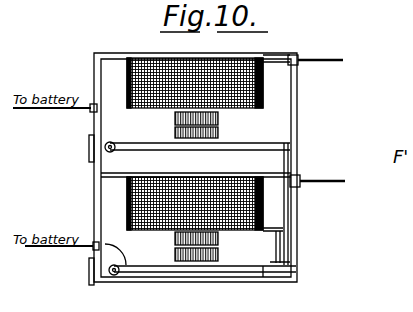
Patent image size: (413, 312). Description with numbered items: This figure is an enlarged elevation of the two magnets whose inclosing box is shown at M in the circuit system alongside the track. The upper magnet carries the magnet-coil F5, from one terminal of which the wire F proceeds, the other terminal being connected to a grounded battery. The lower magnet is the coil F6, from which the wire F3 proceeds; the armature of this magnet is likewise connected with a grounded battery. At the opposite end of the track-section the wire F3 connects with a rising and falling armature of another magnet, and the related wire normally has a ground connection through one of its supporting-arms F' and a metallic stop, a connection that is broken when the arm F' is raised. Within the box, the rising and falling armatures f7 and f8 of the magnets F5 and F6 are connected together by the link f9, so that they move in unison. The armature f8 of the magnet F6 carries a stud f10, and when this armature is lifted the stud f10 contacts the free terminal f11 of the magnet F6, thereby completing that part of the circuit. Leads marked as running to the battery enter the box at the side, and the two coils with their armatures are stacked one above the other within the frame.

The inclosing box M is at (193, 152).
The supporting-arm F' is at (312, 57).
The wire F3 is at (328, 174).
The magnet-coil F5 is at (263, 83).
The magnet coil F6 is at (177, 173).
The armature f7 is at (216, 124).
The armature f8 is at (195, 219).
The link f9 is at (288, 197).
The stud f10 is at (280, 242).
The free terminal f11 is at (277, 222).